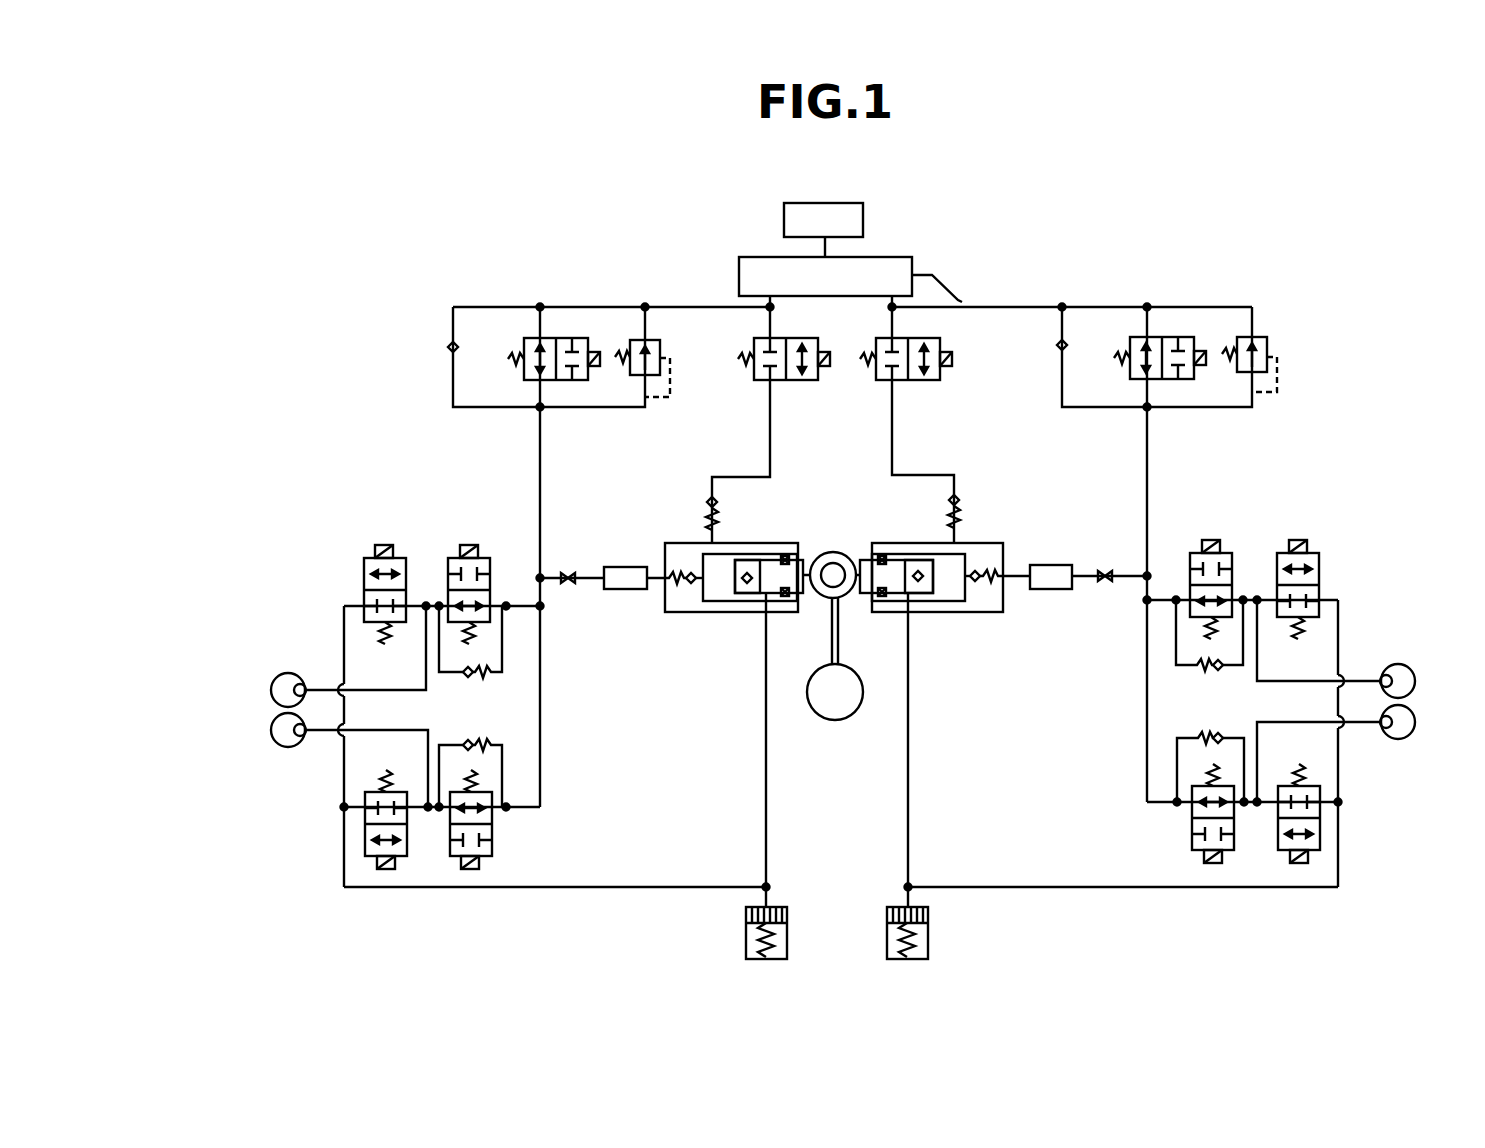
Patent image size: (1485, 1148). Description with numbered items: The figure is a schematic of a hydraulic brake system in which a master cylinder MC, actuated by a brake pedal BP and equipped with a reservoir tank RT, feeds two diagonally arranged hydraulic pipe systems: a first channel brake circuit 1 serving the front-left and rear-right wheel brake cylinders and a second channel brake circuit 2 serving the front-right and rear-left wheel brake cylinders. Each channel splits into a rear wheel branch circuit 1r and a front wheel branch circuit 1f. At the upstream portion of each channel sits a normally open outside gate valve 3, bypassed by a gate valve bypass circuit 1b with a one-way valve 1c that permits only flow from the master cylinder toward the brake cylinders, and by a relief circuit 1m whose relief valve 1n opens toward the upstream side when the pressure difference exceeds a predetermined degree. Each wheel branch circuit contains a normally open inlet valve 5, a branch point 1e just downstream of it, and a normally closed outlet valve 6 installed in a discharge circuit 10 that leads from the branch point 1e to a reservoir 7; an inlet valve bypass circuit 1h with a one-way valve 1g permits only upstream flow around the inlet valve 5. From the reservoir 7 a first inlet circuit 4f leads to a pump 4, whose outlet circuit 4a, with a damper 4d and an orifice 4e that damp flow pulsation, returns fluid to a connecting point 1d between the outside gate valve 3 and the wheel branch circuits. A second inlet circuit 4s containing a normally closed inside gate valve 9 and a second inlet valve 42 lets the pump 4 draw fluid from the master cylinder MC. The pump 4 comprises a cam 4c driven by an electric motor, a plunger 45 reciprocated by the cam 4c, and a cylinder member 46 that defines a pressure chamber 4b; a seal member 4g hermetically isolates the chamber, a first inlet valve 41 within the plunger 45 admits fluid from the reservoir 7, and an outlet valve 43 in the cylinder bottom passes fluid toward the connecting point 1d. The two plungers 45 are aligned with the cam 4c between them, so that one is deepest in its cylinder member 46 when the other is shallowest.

The reservoir tank RT is at (797, 208).
The master cylinder MC is at (750, 257).
The brake pedal BP is at (945, 290).
The first channel brake circuit 1 is at (1003, 307).
The second channel brake circuit 2 is at (672, 307).
The gate valve bypass circuit 1b is at (500, 407).
The one-way valve 1c is at (448, 345).
The relief circuit 1m is at (555, 305).
The relief valve 1n is at (633, 340).
The outside gate valve 3 is at (524, 352).
The inside gate valve 9 is at (754, 350).
The second inlet circuit 4s is at (770, 428).
The second inlet valve 42 is at (707, 500).
The connecting point 1d is at (543, 575).
The outlet circuit 4a is at (658, 576).
The orifice 4e is at (568, 584).
The damper 4d is at (620, 590).
The pump 4 is at (825, 593).
The pressure chamber 4b is at (725, 605).
The cylinder member 46 is at (685, 605).
The outlet valve 43 is at (686, 584).
The plunger 45 is at (790, 600).
The first inlet valve 41 is at (755, 598).
The seal member 4g is at (785, 556).
The cam 4c is at (833, 550).
The first inlet circuit 4f is at (765, 788).
The reservoir 7 is at (746, 935).
The discharge circuit 10 is at (545, 887).
The branch point 1e is at (437, 604).
The outlet valve 6 is at (364, 570).
The inlet valve 5 is at (490, 565).
The one-way valve 1g is at (465, 678).
The inlet valve bypass circuit 1h is at (500, 680).
The front wheel branch circuit 1f is at (340, 686).
The rear wheel branch circuit 1r is at (338, 732).